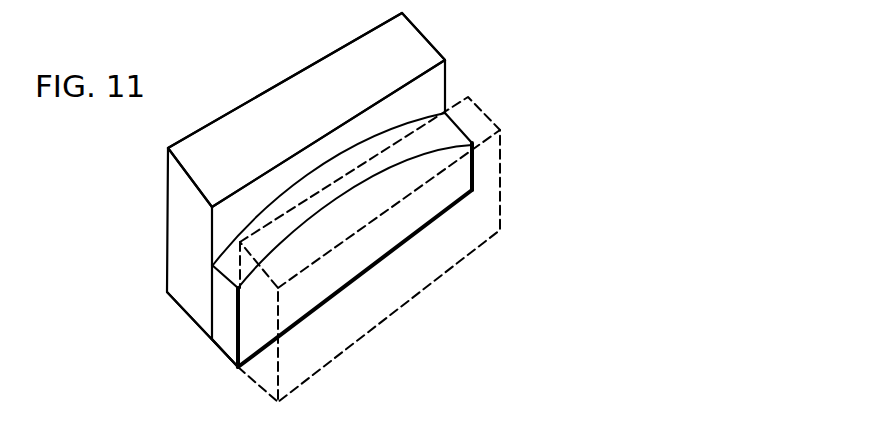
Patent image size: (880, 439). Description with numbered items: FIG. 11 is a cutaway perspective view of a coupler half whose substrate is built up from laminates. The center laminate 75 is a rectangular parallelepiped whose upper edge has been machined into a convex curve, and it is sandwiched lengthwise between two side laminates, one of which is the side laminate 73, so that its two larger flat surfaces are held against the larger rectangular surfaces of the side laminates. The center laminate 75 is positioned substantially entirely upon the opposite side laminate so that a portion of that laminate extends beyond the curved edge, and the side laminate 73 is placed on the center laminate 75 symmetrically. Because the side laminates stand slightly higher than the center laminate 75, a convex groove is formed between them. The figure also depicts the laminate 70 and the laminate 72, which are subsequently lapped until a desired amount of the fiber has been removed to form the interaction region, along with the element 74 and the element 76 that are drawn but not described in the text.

The laminate 70 is at (260, 95).
The laminate 72 is at (502, 198).
The side laminate 73 is at (353, 69).
The bottom edge surface 74 is at (210, 310).
The center laminate 75 is at (475, 131).
The step ledge 76 is at (238, 257).